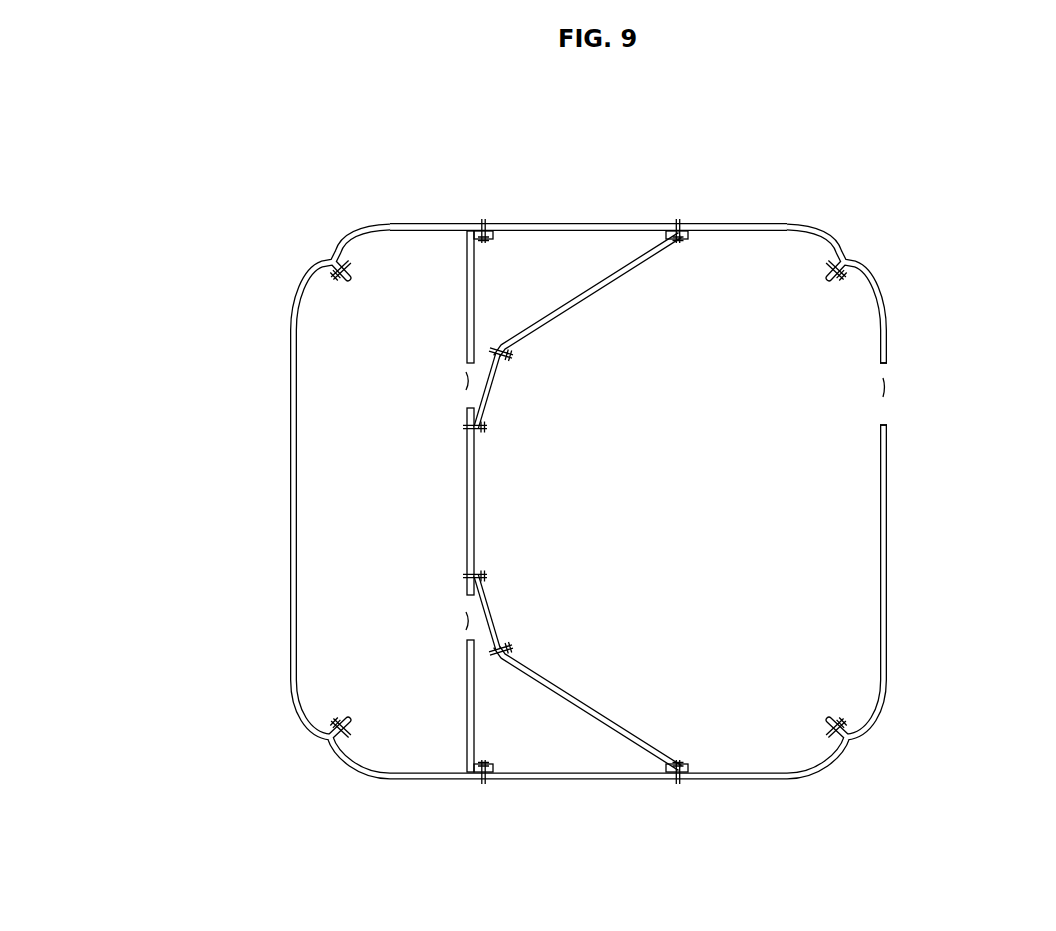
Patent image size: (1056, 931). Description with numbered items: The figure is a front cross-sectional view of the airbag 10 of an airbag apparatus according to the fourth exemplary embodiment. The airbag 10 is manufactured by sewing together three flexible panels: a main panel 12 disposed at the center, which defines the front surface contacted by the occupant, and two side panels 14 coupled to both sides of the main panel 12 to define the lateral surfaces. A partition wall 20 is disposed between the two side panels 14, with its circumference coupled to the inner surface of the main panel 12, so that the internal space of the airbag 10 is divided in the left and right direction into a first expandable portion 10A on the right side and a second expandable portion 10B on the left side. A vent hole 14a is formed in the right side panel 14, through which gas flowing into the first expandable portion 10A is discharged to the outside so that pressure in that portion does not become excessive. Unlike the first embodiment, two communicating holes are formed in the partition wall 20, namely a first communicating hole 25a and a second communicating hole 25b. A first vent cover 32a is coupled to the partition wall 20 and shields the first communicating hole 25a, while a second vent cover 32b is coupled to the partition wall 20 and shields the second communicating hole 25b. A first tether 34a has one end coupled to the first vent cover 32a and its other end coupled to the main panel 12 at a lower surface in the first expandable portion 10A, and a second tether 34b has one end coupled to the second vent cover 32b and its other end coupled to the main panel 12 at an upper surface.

The airbag 10 is at (597, 451).
The first expandable portion 10A is at (840, 603).
The second expandable portion 10B is at (350, 541).
The main panel 12 is at (552, 222).
The side panel 14 is at (291, 668).
The vent hole 14a is at (887, 386).
The partition wall 20 is at (468, 282).
The first communicating hole 25a is at (462, 622).
The second communicating hole 25b is at (462, 380).
The first vent cover 32a is at (490, 620).
The second vent cover 32b is at (490, 383).
The first tether 34a is at (620, 734).
The second tether 34b is at (620, 269).